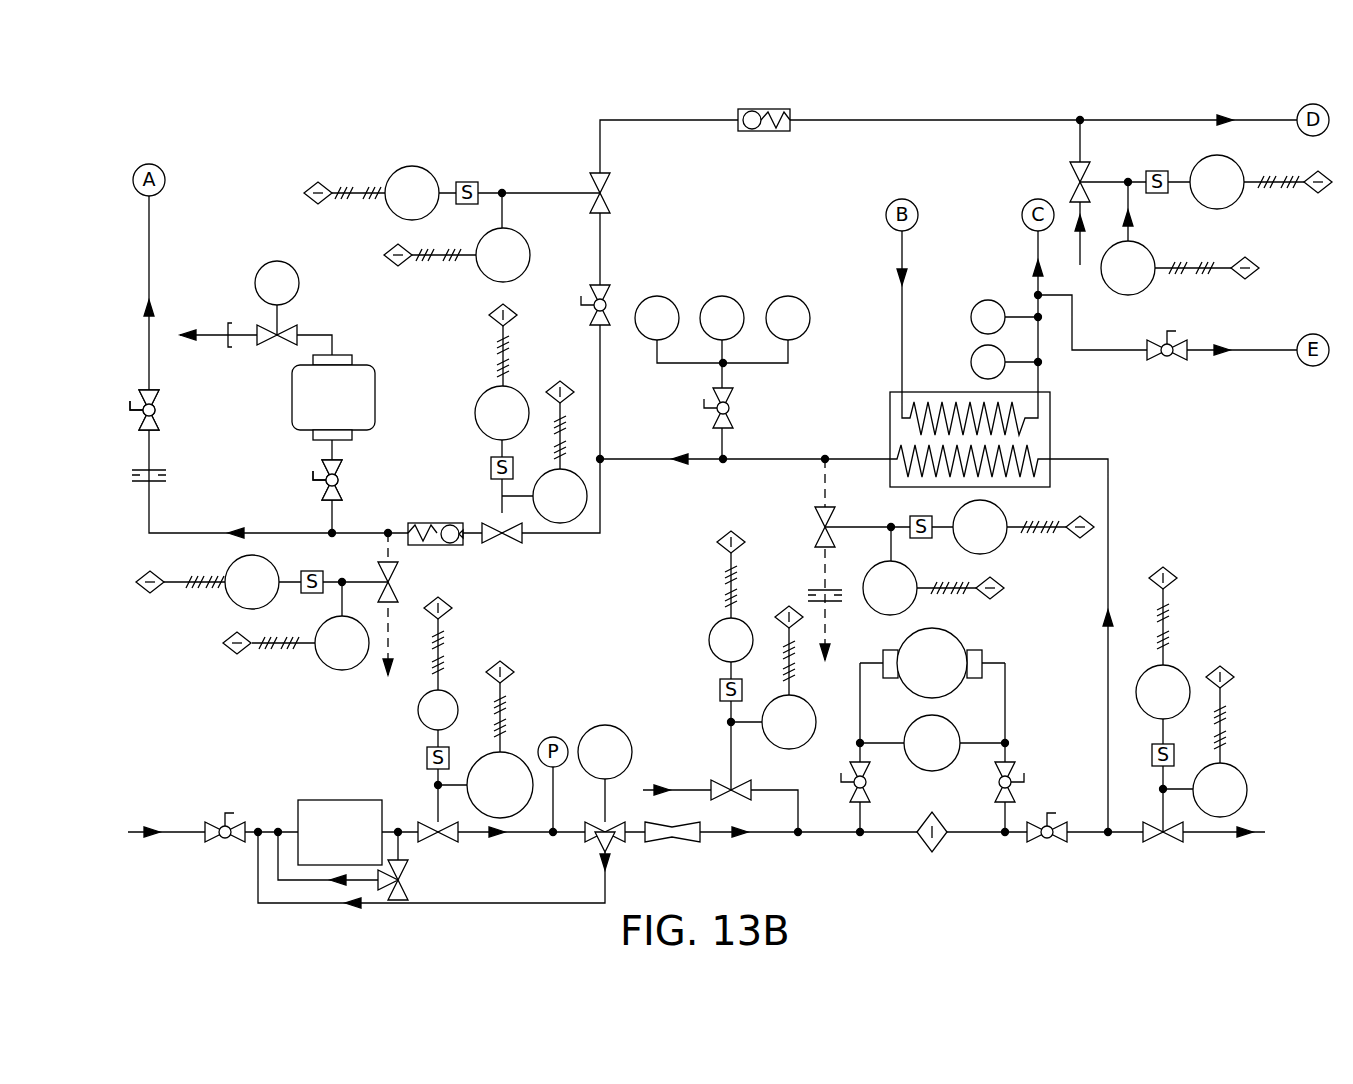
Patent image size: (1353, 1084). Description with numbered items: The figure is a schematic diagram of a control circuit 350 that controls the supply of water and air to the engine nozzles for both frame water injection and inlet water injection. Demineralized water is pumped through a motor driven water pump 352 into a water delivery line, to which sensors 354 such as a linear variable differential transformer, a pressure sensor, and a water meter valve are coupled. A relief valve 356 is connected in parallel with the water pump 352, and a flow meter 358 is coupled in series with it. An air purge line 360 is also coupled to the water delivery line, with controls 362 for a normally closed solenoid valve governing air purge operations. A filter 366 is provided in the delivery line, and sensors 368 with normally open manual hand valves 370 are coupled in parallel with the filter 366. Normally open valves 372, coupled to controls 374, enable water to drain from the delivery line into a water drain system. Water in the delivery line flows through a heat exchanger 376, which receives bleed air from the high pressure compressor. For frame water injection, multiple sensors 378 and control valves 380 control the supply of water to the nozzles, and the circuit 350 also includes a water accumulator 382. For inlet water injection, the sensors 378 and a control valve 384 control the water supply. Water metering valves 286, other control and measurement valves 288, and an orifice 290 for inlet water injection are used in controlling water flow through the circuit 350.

The control circuit 350 is at (235, 133).
The water metering valves 286 is at (412, 166).
The control/measurement valves 288 is at (485, 278).
The sensors 378 is at (270, 262).
The control valve 384 is at (612, 192).
The control valves 380 is at (160, 415).
The orifice 290 is at (160, 482).
The water accumulator 382 is at (312, 410).
The normally open valves 372 is at (400, 578).
The controls 374 is at (232, 603).
The heat exchanger 376 is at (1050, 442).
The water pump 352 is at (320, 800).
The sensors 354 is at (418, 712).
The relief valve 356 is at (412, 877).
The flow meter 358 is at (672, 842).
The air purge line 360 is at (778, 790).
The controls 362 is at (710, 640).
The filter 366 is at (920, 845).
The sensors 368 is at (955, 722).
The valves 370 is at (995, 790).